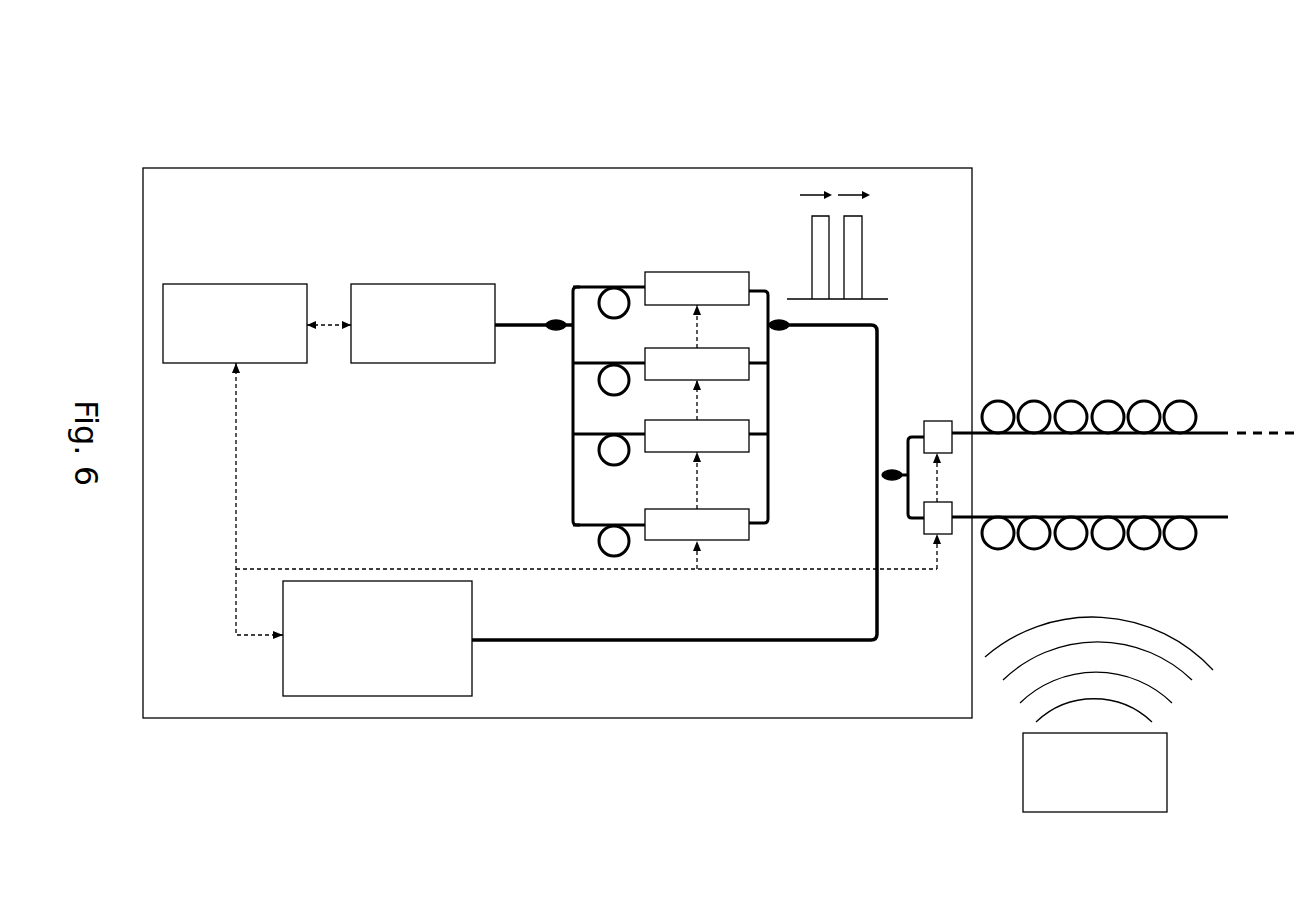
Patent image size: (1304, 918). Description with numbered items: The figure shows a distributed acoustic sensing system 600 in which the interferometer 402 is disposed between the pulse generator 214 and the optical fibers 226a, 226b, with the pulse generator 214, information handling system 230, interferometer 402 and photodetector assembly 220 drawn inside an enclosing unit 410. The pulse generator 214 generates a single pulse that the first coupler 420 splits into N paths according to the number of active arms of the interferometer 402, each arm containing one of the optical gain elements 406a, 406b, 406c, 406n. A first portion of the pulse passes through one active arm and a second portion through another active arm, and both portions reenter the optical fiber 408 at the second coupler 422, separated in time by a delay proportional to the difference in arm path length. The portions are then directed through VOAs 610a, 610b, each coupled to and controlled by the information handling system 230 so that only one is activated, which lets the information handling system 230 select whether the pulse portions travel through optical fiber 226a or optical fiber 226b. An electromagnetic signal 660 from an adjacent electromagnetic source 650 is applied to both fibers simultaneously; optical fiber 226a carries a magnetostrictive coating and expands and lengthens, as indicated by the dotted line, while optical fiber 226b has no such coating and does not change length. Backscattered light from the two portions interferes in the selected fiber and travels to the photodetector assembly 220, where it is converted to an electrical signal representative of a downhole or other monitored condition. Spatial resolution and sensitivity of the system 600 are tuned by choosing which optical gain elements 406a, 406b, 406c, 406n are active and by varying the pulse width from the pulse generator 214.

The distributed acoustic sensing system 600 is at (1110, 147).
The housing / interrogation unit 410 is at (886, 726).
The information handling system 230 is at (233, 284).
The pulse generator 214 is at (420, 284).
The first coupler 420 is at (559, 335).
The interferometer 402 is at (592, 406).
The optical gain element 406a is at (697, 288).
The optical gain element 406b is at (697, 364).
The optical gain element 406c is at (697, 436).
The optical gain element 406n is at (697, 524).
The second coupler 422 is at (783, 331).
The optical fiber 408 is at (878, 373).
The VOA 610a is at (952, 445).
The VOA 610b is at (952, 510).
The optical fiber 226a is at (1210, 430).
The optical fiber 226b is at (1210, 515).
The photodetector assembly 220 is at (280, 645).
The electromagnetic signal 660 is at (1200, 648).
The electromagnetic source 650 is at (1167, 770).